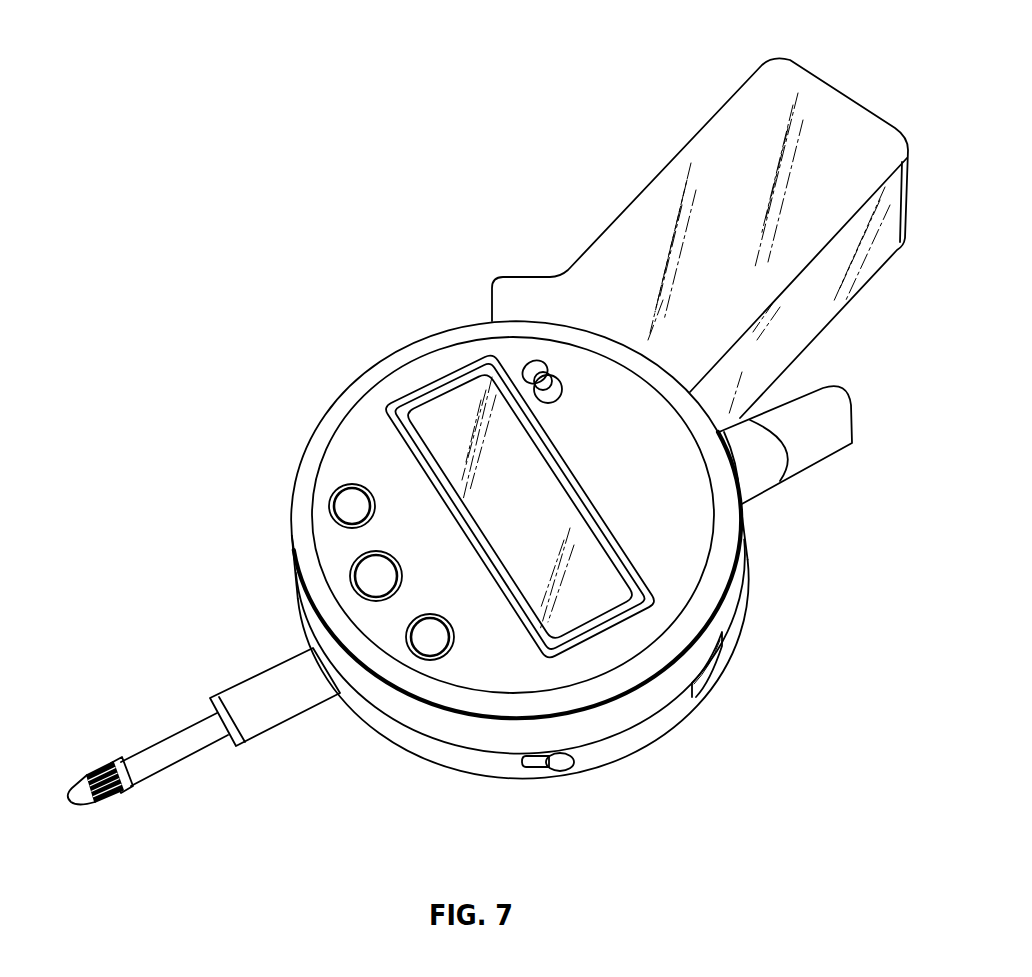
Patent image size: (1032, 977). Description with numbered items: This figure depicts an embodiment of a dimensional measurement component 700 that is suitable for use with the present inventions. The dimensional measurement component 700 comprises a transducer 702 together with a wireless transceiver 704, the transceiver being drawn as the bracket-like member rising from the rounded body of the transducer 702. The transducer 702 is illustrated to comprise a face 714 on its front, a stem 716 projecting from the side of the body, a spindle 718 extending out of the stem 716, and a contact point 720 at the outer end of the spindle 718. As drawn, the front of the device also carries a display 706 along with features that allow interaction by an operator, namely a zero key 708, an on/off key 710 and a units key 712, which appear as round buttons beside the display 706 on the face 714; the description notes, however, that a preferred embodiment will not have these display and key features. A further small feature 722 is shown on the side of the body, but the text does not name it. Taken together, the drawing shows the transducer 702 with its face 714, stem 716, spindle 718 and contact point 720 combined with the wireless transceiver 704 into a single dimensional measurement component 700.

The dimensional measurement component 700 is at (340, 141).
The transducer 702 is at (366, 428).
The wireless transceiver 704 is at (730, 160).
The display 706 is at (545, 563).
The zero key 708 is at (427, 638).
The on/off key 710 is at (377, 579).
The units key 712 is at (348, 508).
The face 714 is at (652, 503).
The stem 716 is at (278, 708).
The spindle 718 is at (175, 752).
The contact point 720 is at (75, 797).
The side slot 722 is at (712, 688).